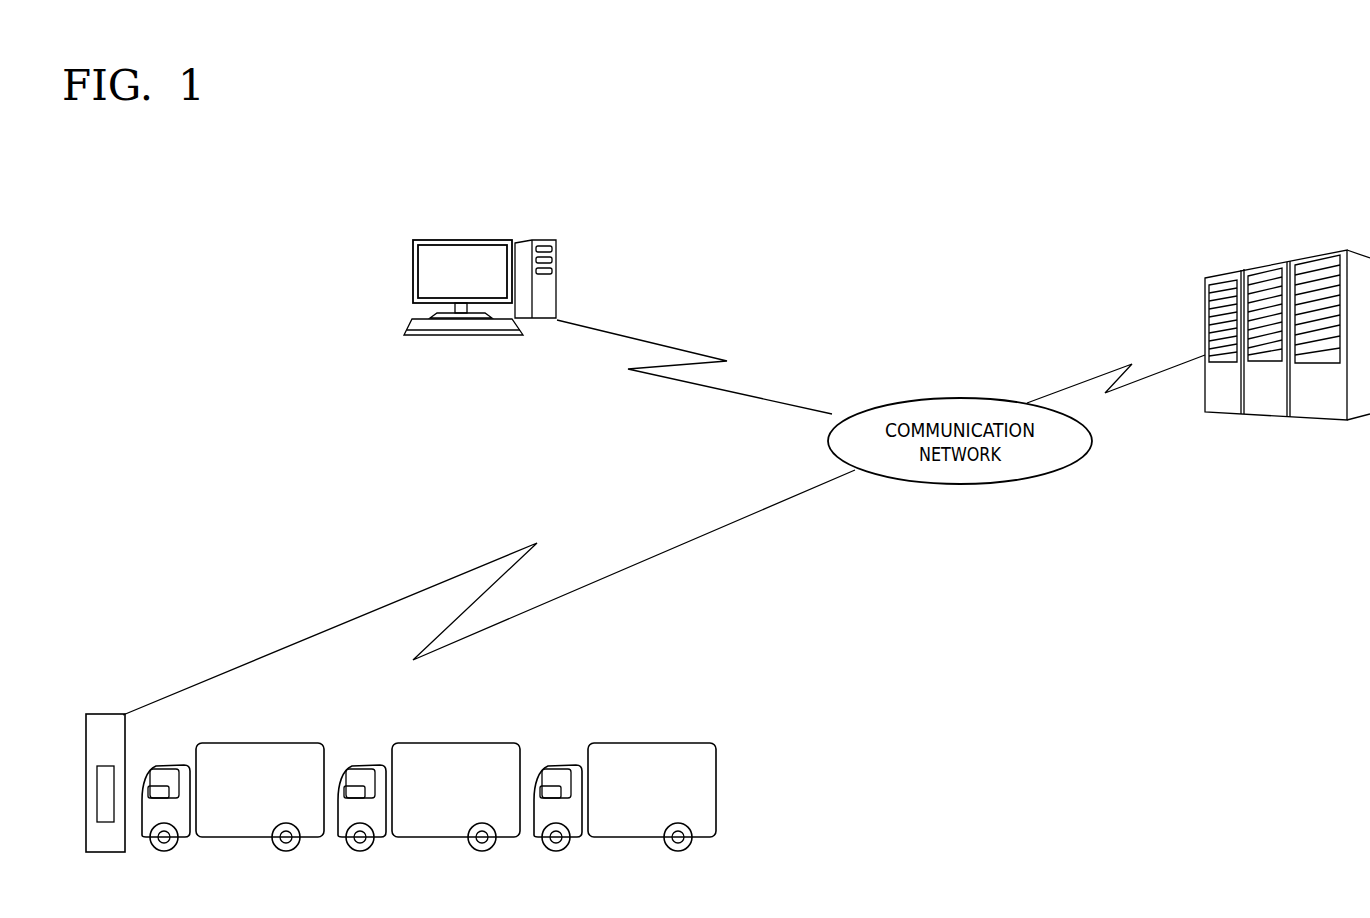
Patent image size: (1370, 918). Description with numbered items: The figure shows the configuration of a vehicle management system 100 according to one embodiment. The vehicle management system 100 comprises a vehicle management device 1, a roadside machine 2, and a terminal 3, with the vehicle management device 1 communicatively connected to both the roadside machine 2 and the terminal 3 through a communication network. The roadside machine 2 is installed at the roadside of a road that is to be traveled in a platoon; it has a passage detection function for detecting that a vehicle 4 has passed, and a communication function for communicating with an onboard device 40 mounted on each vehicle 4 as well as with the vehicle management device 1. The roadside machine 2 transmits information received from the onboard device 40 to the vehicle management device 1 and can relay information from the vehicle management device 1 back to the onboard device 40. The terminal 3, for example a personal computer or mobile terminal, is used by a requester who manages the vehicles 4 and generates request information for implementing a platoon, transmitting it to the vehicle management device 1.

The vehicle management system 100 is at (913, 201).
The vehicle management device 1 is at (1270, 268).
The roadside machine 2 is at (103, 714).
The terminal 3 is at (468, 240).
The vehicle 4 is at (262, 744).
The onboard device 40 is at (160, 770).